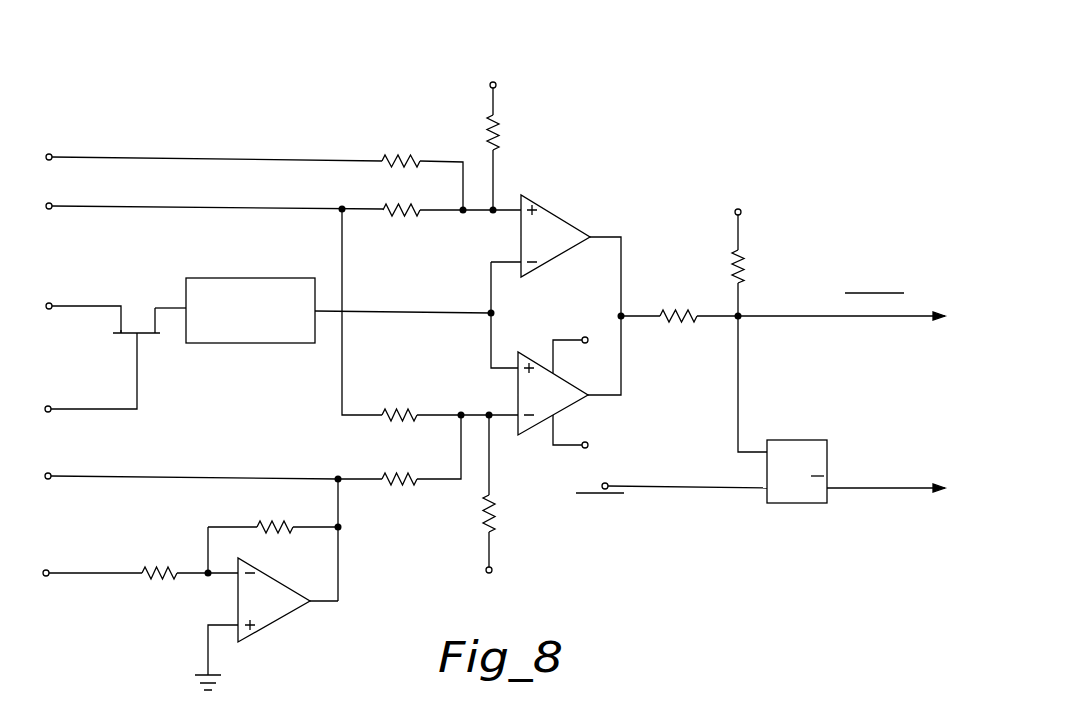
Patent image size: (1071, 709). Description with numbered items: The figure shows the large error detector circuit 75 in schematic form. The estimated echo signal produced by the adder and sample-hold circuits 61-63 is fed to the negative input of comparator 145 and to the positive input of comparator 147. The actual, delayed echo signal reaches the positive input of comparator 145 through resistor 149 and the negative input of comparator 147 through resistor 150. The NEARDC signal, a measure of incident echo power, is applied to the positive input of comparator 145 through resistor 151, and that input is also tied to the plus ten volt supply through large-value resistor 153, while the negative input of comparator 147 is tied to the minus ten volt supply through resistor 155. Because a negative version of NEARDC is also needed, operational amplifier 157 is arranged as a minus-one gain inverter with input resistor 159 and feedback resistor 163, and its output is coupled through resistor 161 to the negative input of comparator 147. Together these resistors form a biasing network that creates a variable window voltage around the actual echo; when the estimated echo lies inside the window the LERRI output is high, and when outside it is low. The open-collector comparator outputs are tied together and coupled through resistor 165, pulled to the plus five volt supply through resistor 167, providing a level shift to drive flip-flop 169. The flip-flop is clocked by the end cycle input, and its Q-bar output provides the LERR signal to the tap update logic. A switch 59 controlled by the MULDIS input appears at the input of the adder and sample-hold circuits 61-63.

The transistor switch 59 is at (145, 340).
The adder and sample-hold circuits 61-63 is at (250, 293).
The large error detector circuit 75 is at (499, 383).
The comparator 145 is at (561, 229).
The comparator 147 is at (560, 393).
The resistor 149 is at (409, 228).
The resistor 150 is at (413, 401).
The resistor 151 is at (394, 142).
The resistor 153 is at (517, 145).
The resistor 155 is at (515, 517).
The operational amplifier 157 is at (280, 605).
The resistor 159 is at (148, 589).
The resistor 161 is at (394, 465).
The resistor 163 is at (286, 515).
The resistor 165 is at (683, 332).
The resistor 167 is at (764, 266).
The flip-flop 169 is at (803, 455).